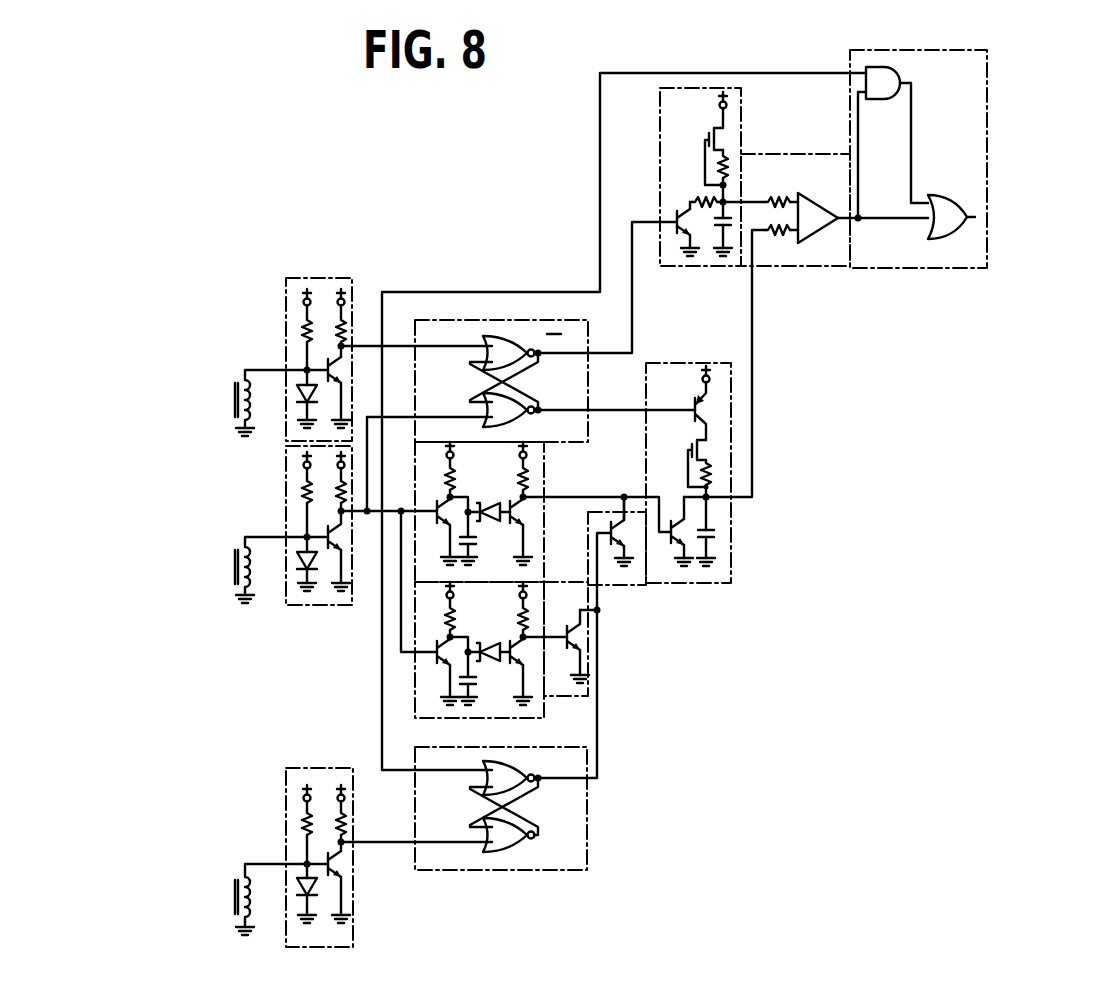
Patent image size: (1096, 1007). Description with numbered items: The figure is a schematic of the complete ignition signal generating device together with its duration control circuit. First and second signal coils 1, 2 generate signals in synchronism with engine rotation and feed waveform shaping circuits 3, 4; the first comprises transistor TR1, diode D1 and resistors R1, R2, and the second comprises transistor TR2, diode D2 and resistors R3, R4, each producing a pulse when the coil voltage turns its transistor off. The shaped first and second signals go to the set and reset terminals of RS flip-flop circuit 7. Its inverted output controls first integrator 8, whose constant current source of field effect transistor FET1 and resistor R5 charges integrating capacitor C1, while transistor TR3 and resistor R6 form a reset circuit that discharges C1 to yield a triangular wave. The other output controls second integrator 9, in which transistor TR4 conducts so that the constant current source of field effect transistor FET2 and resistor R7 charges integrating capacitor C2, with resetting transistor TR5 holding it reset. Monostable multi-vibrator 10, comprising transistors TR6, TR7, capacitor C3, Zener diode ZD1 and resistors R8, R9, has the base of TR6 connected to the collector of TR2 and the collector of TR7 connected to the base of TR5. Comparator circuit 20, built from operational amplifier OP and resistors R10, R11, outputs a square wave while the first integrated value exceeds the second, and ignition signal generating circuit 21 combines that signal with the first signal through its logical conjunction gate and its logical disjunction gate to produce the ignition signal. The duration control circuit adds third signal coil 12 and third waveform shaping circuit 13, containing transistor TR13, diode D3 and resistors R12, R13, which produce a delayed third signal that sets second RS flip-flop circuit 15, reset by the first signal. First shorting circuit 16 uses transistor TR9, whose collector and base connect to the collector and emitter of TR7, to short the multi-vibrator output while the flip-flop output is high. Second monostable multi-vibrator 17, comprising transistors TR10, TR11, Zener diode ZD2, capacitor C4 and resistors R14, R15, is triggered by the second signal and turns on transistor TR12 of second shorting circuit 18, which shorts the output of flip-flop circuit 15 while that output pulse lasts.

The first signal coil 1 is at (236, 380).
The second signal coil 2 is at (236, 568).
The third signal coil 12 is at (243, 864).
The waveform shaping circuit 3 is at (333, 278).
The waveform shaping circuit 4 is at (302, 607).
The third waveform shaping circuit 13 is at (325, 947).
The RS flip-flop circuit 7 is at (505, 320).
The second RS flip-flop circuit 15 is at (588, 820).
The first integrator 8 is at (695, 88).
The second integrator 9 is at (698, 364).
The monostable multi-vibrator 10 is at (545, 474).
The second monostable multi-vibrator 17 is at (415, 679).
The first shorting circuit 16 is at (614, 584).
The second shorting circuit 18 is at (589, 684).
The comparator circuit 20 is at (822, 268).
The ignition signal generating circuit 21 is at (909, 268).
The resistor R1 is at (301, 330).
The resistor R2 is at (342, 330).
The resistor R3 is at (300, 504).
The resistor R4 is at (335, 481).
The resistor R5 is at (733, 155).
The resistor R6 is at (701, 200).
The resistor R7 is at (714, 476).
The resistor R8 is at (449, 478).
The resistor R9 is at (518, 477).
The resistor R10 is at (778, 197).
The resistor R11 is at (768, 264).
The resistor R12 is at (302, 821).
The resistor R13 is at (346, 833).
The resistor R14 is at (449, 618).
The resistor R15 is at (520, 617).
The integrating capacitor C1 is at (706, 243).
The integrating capacitor C2 is at (719, 532).
The capacitor C3 is at (479, 541).
The capacitor C4 is at (479, 680).
The diode D1 is at (301, 386).
The diode D2 is at (296, 570).
The diode D3 is at (300, 880).
The Zener diode ZD1 is at (488, 498).
The Zener diode ZD2 is at (488, 638).
The transistor TR1 is at (343, 368).
The transistor TR2 is at (345, 538).
The transistor TR3 is at (676, 211).
The transistor TR4 is at (696, 399).
The resetting transistor TR5 is at (688, 523).
The transistor TR6 is at (441, 534).
The transistor TR7 is at (532, 518).
The transistor TR9 is at (627, 548).
The transistor TR10 is at (441, 674).
The transistor TR11 is at (528, 657).
The transistor TR12 is at (581, 641).
The transistor TR13 is at (352, 865).
The field effect transistor FET1 is at (710, 136).
The field effect transistor FET2 is at (691, 449).
The operational amplifier OP is at (822, 199).